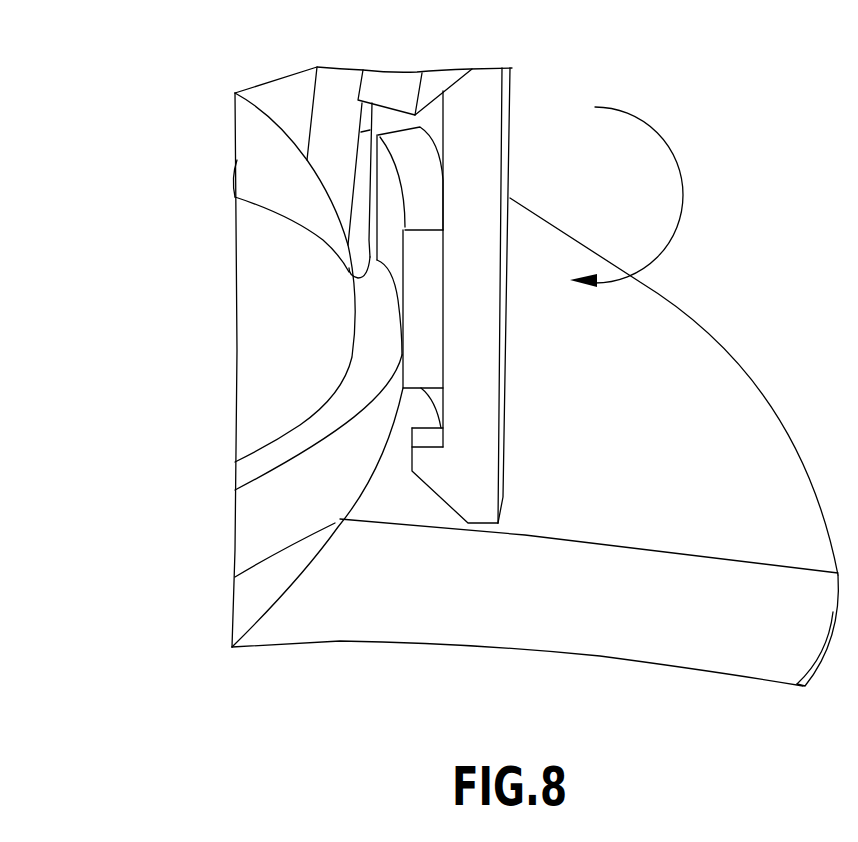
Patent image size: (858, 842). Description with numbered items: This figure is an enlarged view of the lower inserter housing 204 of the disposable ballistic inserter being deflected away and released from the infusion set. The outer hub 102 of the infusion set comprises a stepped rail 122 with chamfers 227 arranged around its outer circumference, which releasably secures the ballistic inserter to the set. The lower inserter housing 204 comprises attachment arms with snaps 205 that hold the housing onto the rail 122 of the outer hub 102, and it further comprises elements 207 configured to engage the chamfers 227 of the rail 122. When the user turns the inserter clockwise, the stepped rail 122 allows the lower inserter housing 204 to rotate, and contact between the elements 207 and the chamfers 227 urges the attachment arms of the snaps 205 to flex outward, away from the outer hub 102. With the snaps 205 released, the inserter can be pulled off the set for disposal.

The outer hub 102 is at (258, 590).
The stepped rail 122 is at (353, 387).
The chamfers 227 is at (347, 277).
The elements 207 is at (420, 310).
The snaps 205 is at (455, 442).
The lower inserter housing 204 is at (510, 88).